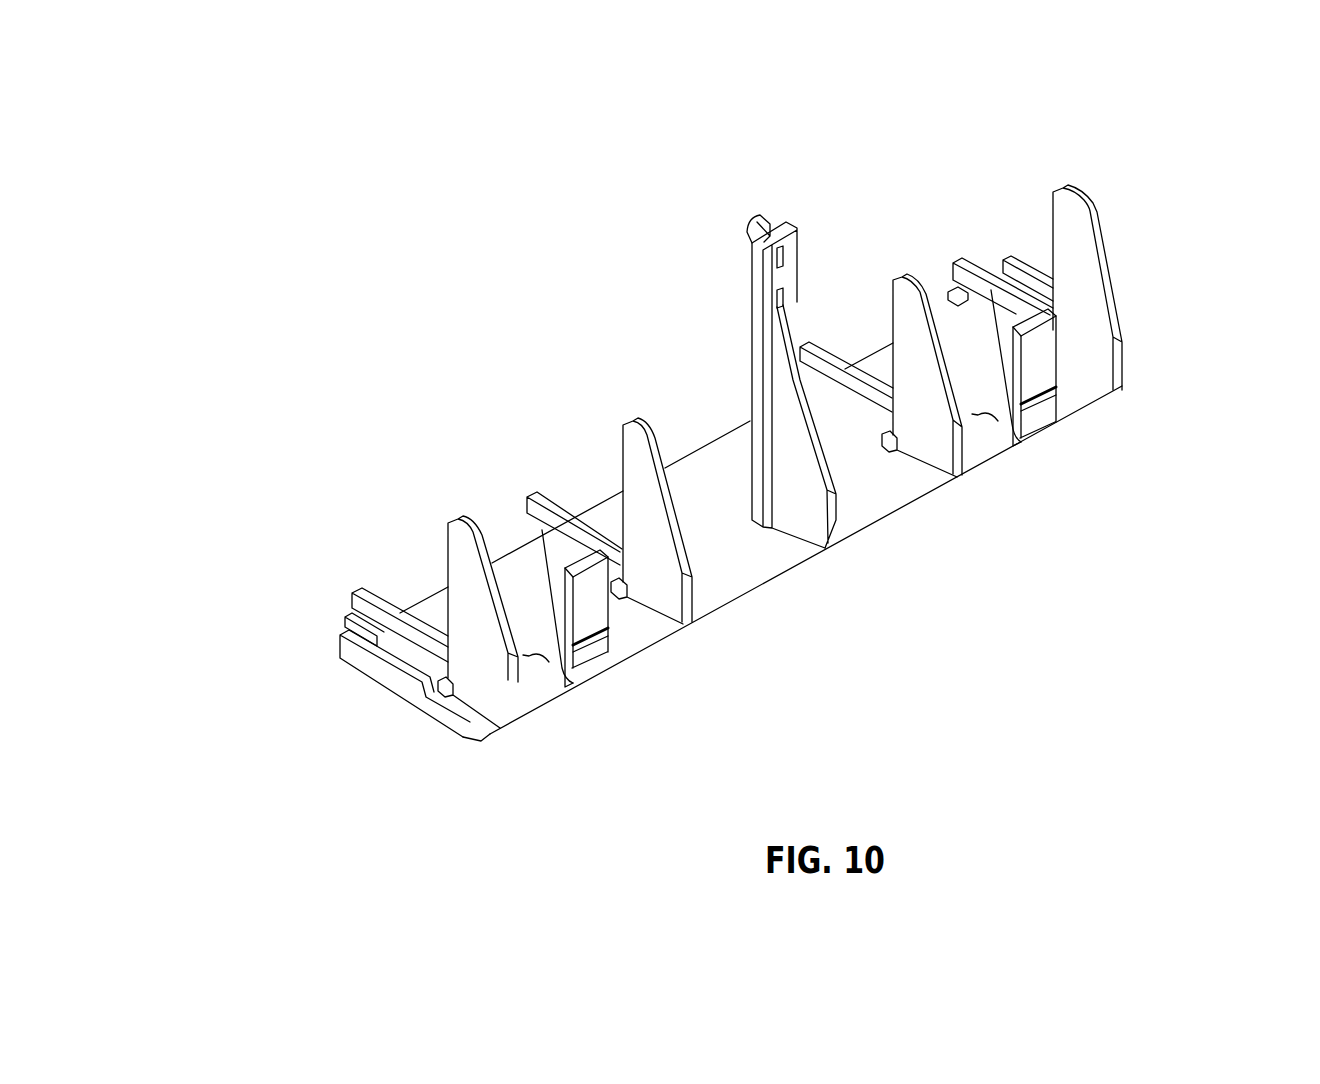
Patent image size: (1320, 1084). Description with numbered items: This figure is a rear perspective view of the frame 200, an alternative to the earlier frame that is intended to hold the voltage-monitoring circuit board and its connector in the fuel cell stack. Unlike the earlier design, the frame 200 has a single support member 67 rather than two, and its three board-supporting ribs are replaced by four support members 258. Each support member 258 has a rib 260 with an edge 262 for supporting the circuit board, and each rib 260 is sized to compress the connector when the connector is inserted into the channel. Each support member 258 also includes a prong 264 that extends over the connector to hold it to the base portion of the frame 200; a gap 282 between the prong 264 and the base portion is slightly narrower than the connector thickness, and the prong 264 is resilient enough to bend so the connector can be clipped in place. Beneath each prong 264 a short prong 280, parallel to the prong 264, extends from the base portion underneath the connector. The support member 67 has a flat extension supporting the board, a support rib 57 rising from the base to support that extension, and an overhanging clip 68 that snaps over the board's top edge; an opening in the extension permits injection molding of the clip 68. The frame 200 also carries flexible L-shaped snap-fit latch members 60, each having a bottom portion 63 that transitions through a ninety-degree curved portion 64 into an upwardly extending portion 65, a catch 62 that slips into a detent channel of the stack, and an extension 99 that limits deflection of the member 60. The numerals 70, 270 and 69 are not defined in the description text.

The frame 200 is at (320, 374).
The rib 260 is at (475, 688).
The edge 262 is at (447, 577).
The prong 264 is at (383, 607).
The support member 258 is at (492, 708).
The gap 282 is at (378, 628).
The short prong 280 is at (367, 637).
The rail 70 is at (383, 677).
The insertion direction 270 is at (503, 551).
The snap-fit latch member 60 is at (849, 554).
The extension 99 is at (546, 546).
The catch 62 is at (598, 620).
The upwardly extending portion 65 is at (611, 632).
The bottom portion 63 is at (537, 663).
The curved portion 64 is at (572, 688).
The support member 67 is at (722, 335).
The overhanging clip 68 is at (755, 213).
The post aperture 69 is at (780, 247).
The support rib 57 is at (825, 548).